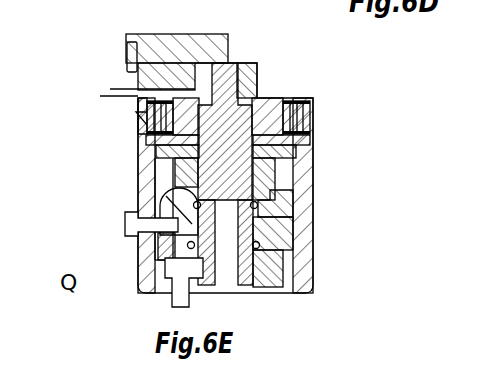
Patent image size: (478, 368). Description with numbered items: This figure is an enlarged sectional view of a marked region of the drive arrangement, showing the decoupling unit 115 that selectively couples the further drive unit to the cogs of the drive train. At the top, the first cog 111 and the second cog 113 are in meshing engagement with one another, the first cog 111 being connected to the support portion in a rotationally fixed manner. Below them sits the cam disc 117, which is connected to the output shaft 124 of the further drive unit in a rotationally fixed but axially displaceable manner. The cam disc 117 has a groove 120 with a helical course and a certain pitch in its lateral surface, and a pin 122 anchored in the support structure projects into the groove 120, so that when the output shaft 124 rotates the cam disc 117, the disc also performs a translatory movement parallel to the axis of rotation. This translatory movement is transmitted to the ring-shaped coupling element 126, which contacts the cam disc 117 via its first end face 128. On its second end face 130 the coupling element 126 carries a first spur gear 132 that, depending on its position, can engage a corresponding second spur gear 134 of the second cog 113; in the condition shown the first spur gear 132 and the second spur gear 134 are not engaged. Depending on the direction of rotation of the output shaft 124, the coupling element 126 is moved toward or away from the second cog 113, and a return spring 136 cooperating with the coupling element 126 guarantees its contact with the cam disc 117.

The first cog 111 is at (169, 56).
The second cog 113 is at (258, 83).
The decoupling unit 115 is at (126, 166).
The cam disc 117 is at (297, 262).
The groove 120 is at (297, 237).
The pin 122 is at (126, 222).
The output shaft 124 is at (222, 283).
The coupling element 126 is at (312, 172).
The first end face 128 is at (300, 212).
The second end face 130 is at (311, 123).
The first spur gear 132 is at (160, 117).
The second spur gear 134 is at (135, 89).
The return spring 136 is at (130, 73).